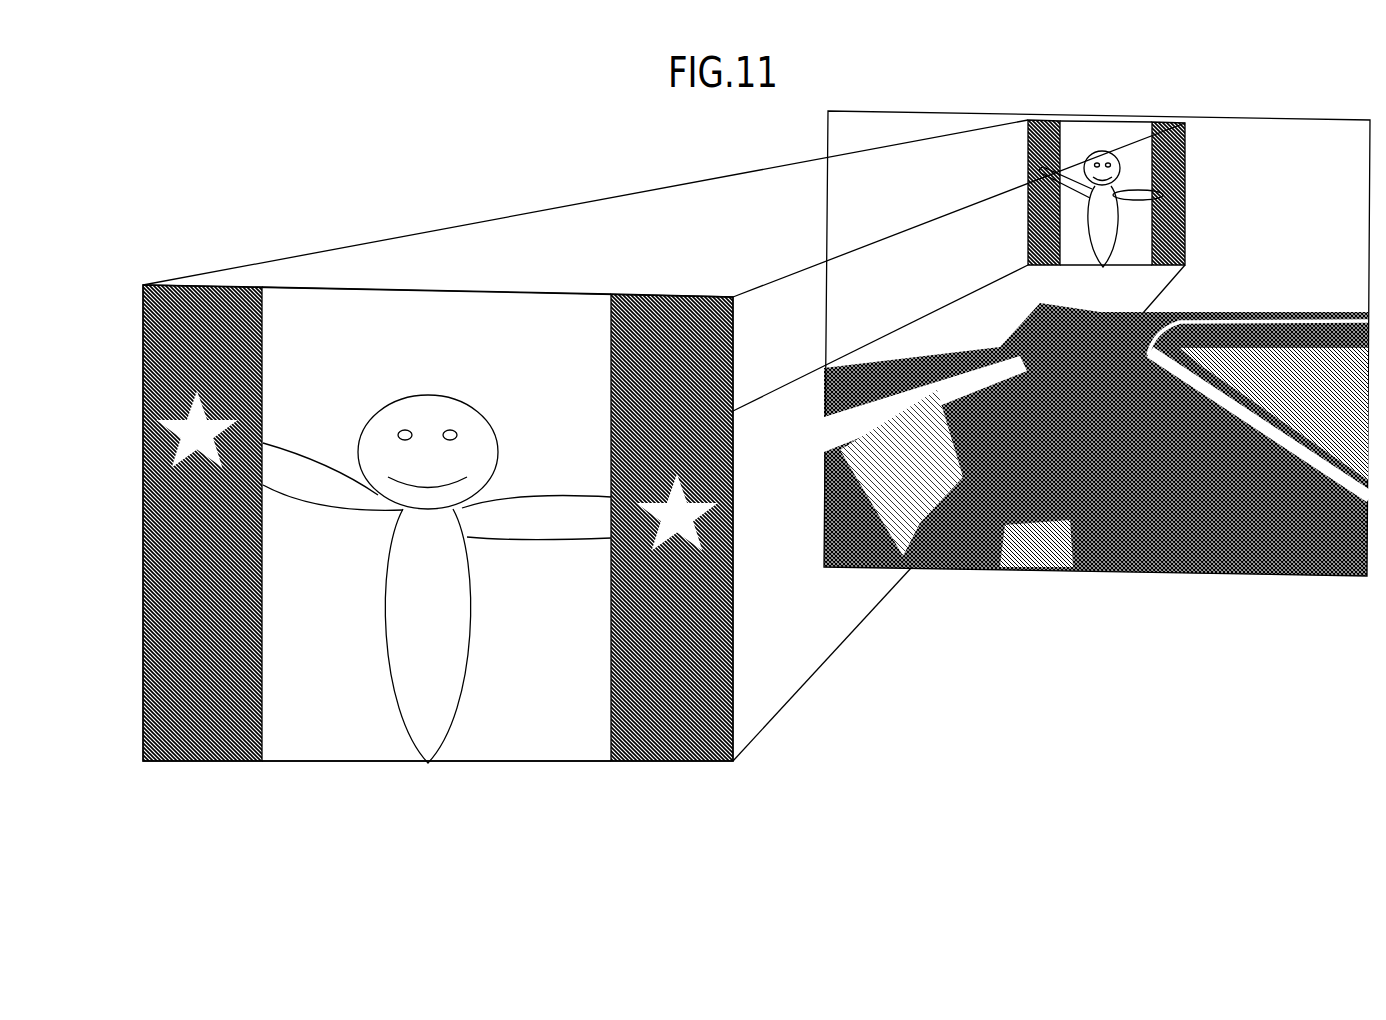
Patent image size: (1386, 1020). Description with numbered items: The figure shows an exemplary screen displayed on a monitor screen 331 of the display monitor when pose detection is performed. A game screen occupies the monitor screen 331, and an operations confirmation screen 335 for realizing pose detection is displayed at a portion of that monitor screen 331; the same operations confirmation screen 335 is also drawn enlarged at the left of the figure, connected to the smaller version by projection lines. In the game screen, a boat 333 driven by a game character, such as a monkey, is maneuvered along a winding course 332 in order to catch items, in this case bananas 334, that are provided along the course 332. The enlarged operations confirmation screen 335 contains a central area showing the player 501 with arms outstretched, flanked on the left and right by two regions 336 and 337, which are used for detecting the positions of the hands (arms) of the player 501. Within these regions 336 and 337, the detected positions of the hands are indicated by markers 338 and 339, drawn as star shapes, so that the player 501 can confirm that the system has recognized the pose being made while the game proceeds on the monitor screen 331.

The monitor screen 331 is at (1338, 577).
The winding course 332 is at (982, 573).
The boat 333 is at (1057, 540).
The bananas 334 is at (1095, 520).
The operations confirmation screen 335 is at (567, 299).
The region 336 is at (140, 413).
The region 337 is at (733, 645).
The marker 338 is at (140, 665).
The marker 339 is at (733, 578).
The player 501 is at (430, 763).